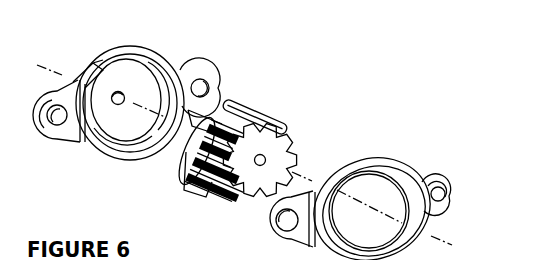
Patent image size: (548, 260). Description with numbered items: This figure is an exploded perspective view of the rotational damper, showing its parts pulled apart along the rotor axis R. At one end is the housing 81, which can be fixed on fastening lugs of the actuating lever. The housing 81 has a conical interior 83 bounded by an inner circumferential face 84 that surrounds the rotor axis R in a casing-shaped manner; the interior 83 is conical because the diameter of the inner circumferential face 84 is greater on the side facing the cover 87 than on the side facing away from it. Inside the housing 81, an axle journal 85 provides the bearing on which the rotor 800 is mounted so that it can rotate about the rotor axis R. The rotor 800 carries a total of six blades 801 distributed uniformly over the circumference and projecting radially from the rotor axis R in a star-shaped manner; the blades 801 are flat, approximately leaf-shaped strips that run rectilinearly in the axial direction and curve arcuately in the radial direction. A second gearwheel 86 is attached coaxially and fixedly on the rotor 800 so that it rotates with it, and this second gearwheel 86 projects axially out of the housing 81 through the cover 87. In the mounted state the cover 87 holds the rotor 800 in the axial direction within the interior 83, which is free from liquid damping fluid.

The housing 81 is at (110, 60).
The conical interior 83 is at (139, 79).
The inner circumferential face 84 is at (138, 134).
The axle journal 85 is at (116, 104).
The second gearwheel 86 is at (291, 150).
The cover 87 is at (402, 172).
The rotor 800 is at (203, 186).
The blades 801 is at (246, 110).
The rotor axis R is at (431, 235).